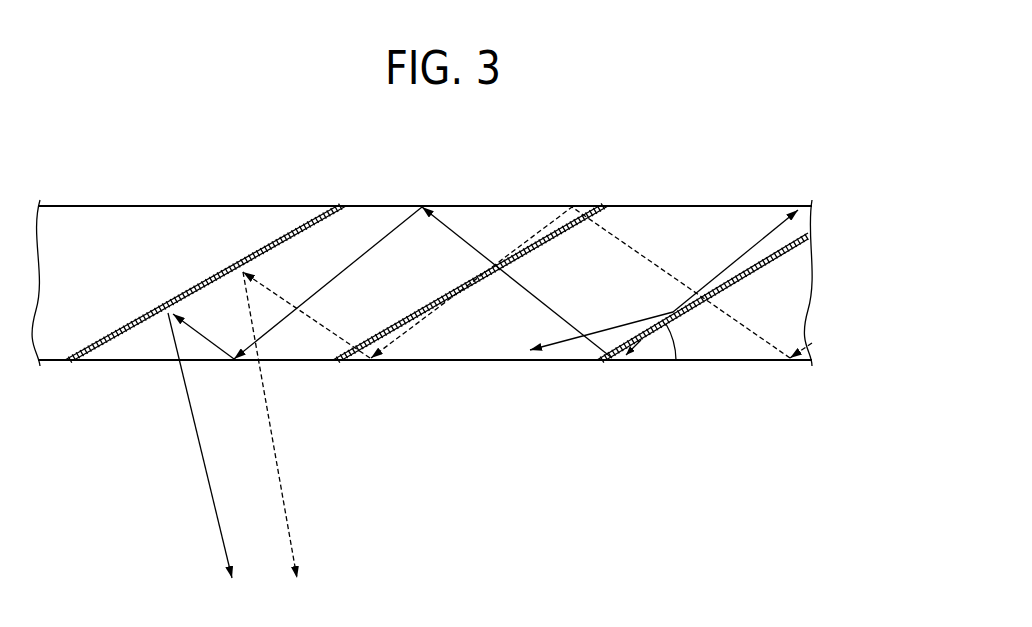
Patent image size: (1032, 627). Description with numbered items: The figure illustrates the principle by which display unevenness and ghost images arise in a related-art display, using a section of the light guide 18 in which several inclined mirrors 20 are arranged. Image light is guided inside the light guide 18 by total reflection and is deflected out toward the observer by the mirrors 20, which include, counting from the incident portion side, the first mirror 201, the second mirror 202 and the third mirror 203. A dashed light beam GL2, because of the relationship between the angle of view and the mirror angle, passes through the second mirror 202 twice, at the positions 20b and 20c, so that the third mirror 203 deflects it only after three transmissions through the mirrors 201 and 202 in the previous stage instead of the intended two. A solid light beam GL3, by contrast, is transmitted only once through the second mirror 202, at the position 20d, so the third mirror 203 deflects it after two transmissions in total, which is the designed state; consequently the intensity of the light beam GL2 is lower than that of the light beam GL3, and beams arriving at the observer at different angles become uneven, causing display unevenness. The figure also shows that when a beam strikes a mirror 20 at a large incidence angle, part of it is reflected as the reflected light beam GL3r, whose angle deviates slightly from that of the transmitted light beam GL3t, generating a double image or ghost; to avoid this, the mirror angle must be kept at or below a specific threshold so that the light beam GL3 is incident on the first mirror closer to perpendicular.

The light guide 18 is at (112, 217).
The mirror 20 is at (490, 285).
The first mirror 201 is at (765, 268).
The second mirror 202 is at (494, 268).
The third mirror 203 is at (252, 244).
The first transmission position 20b is at (579, 204).
The second transmission position 20c is at (357, 366).
The transmission position 20d is at (516, 268).
The light beam GL2 is at (640, 253).
The light beam GL3 is at (448, 228).
The reflected light beam GL3r is at (563, 341).
The transmitted light beam GL3t is at (635, 350).